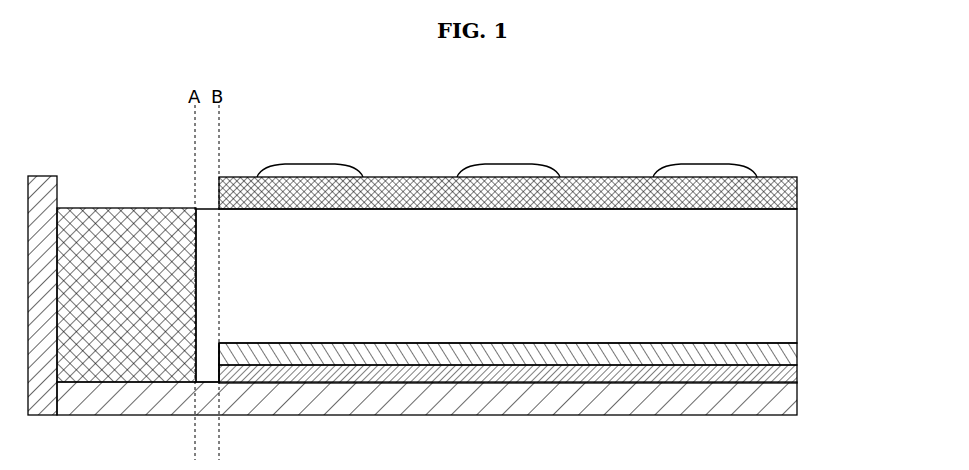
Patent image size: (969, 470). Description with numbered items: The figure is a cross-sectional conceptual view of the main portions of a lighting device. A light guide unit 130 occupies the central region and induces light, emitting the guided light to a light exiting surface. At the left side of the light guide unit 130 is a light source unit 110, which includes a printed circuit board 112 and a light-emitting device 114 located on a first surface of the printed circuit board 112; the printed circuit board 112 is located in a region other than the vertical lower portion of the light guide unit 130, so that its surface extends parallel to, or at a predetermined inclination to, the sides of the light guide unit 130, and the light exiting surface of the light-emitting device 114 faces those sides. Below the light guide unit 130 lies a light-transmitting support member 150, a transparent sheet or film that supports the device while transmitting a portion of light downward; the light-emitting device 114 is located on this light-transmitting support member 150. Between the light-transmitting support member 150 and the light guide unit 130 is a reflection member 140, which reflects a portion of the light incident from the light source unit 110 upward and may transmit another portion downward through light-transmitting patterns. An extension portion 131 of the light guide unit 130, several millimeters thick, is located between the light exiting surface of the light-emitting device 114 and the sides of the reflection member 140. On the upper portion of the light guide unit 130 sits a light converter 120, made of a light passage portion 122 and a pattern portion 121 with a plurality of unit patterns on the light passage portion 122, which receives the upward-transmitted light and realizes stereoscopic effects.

The light source unit 110 is at (112, 246).
The printed circuit board 112 is at (42, 175).
The light-emitting device 114 is at (100, 208).
The light converter 120 is at (567, 180).
The pattern portion 121 is at (730, 167).
The light passage portion 122 is at (797, 192).
The light guide unit 130 is at (797, 272).
The extension portion 131 is at (209, 367).
The reflection member 140 is at (797, 350).
The light-transmitting support member 150 is at (797, 400).